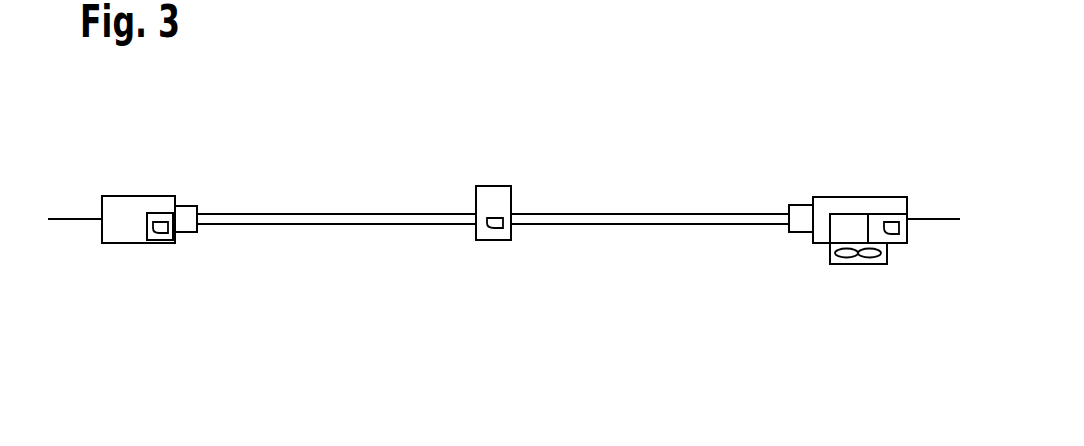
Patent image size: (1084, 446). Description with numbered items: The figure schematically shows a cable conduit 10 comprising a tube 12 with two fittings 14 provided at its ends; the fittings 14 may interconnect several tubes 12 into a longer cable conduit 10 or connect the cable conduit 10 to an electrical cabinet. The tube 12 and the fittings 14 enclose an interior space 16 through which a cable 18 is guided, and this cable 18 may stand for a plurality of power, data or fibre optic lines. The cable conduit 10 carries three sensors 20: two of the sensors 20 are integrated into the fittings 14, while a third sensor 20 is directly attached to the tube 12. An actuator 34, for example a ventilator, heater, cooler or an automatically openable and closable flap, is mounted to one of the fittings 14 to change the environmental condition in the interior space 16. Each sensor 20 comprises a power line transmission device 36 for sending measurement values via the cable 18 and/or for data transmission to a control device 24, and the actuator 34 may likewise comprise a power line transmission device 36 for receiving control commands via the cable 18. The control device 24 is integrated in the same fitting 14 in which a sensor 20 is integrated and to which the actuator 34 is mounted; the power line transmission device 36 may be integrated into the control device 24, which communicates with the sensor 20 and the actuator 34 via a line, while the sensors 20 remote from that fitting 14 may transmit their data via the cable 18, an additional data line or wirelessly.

The cable conduit 10 is at (103, 119).
The tube 12 is at (288, 214).
The fitting 14 is at (122, 243).
The interior space 16 is at (608, 213).
The cable 18 is at (75, 220).
The sensor 20 is at (165, 196).
The control device 24 is at (852, 213).
The actuator 34 is at (858, 265).
The power line transmission device 36 is at (158, 243).